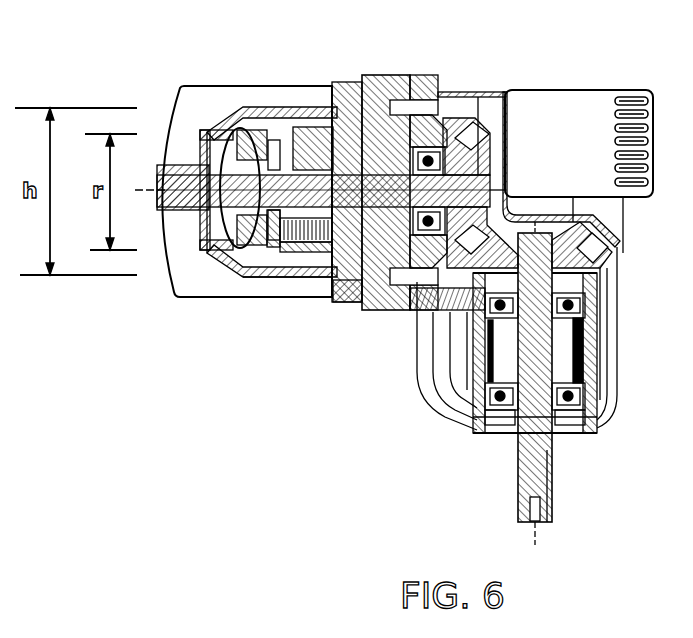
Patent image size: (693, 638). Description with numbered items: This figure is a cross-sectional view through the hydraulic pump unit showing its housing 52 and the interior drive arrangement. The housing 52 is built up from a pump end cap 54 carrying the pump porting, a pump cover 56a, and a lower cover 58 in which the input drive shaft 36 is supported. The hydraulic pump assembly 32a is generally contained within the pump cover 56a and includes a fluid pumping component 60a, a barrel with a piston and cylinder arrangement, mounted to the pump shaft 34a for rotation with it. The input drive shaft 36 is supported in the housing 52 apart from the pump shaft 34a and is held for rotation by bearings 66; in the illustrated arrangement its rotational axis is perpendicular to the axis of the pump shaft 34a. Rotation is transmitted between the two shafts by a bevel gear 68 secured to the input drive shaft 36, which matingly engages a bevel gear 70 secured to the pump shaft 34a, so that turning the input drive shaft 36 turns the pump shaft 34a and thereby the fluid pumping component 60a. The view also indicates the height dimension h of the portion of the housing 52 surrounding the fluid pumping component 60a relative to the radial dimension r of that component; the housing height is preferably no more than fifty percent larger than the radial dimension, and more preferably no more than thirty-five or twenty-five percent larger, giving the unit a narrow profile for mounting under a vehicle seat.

The housing 52 is at (189, 82).
The pump shaft 34a is at (186, 164).
The pump cover 56a is at (246, 106).
The fluid pumping component 60a is at (309, 112).
The pump end cap 54 is at (374, 80).
The bevel gear 70 is at (478, 96).
The hydraulic pump assembly 32a is at (257, 283).
The lower cover 58 is at (430, 356).
The bevel gear 68 is at (607, 273).
The bearings 66 is at (583, 350).
The input drive shaft 36 is at (535, 478).